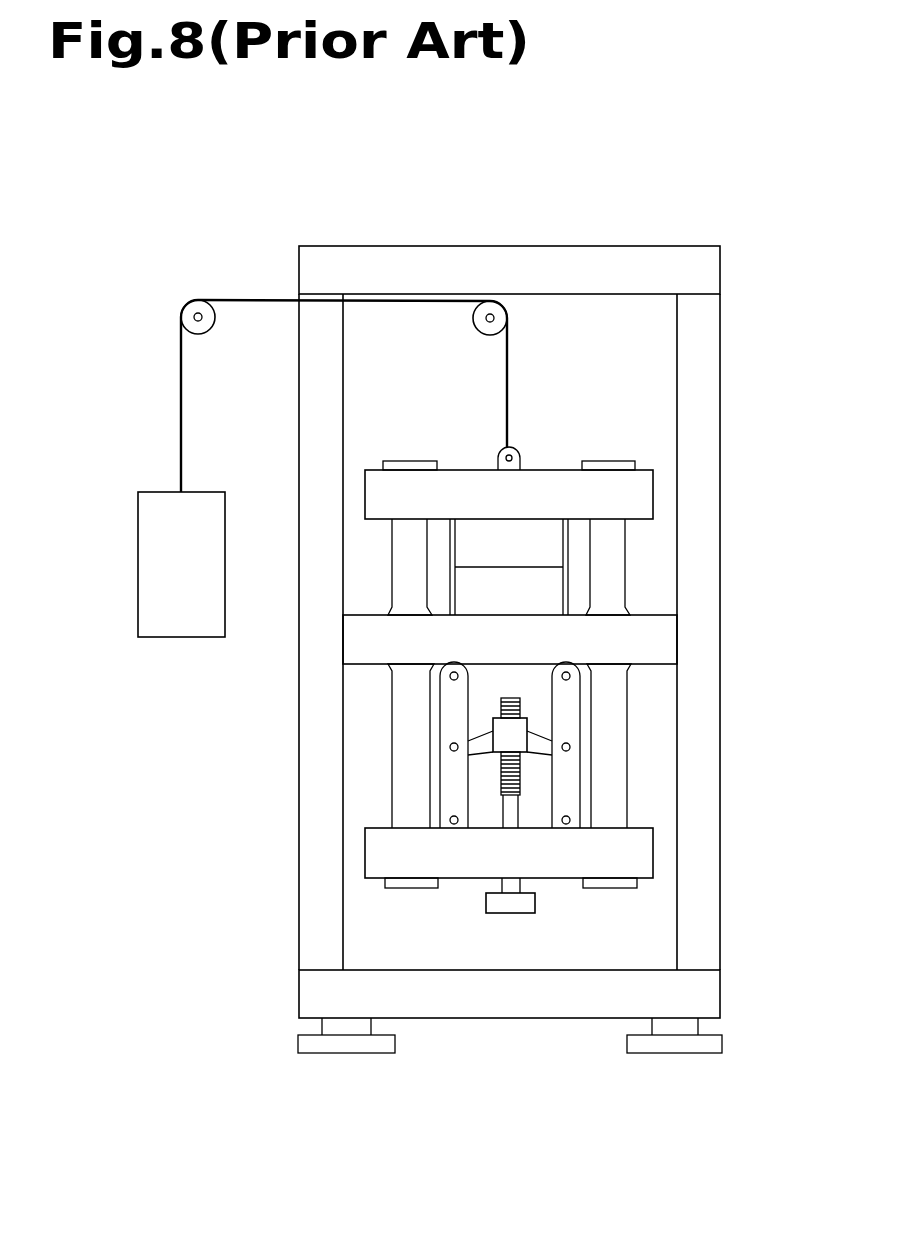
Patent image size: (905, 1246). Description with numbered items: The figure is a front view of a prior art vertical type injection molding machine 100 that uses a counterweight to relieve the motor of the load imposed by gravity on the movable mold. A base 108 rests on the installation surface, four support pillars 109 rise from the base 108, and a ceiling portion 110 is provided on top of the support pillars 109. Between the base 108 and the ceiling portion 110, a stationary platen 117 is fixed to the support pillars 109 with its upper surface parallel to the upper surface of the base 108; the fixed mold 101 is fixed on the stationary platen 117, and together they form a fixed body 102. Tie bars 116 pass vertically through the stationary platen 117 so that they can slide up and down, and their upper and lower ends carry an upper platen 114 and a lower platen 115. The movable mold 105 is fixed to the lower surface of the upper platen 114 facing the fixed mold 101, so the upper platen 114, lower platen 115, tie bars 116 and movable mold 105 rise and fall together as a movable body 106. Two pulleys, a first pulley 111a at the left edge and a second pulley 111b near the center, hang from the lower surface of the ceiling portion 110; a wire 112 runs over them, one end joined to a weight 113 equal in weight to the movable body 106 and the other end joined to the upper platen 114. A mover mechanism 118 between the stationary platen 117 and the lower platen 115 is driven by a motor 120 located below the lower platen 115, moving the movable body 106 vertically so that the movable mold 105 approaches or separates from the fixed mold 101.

The vertical type injection molding machine 100 is at (740, 198).
The fixed mold 101 is at (550, 590).
The fixed body 102 is at (343, 635).
The movable mold 105 is at (550, 538).
The movable body 106 is at (365, 493).
The base 108 is at (705, 996).
The support pillars 109 is at (705, 597).
The ceiling portion 110 is at (700, 270).
The first pulley 111a is at (195, 302).
The second pulley 111b is at (488, 302).
The wire 112 is at (181, 407).
The weight 113 is at (150, 555).
The upper platen 114 is at (510, 487).
The lower platen 115 is at (640, 852).
The tie bars 116 is at (615, 752).
The stationary platen 117 is at (663, 641).
The mover mechanism 118 is at (443, 742).
The motor 120 is at (509, 913).